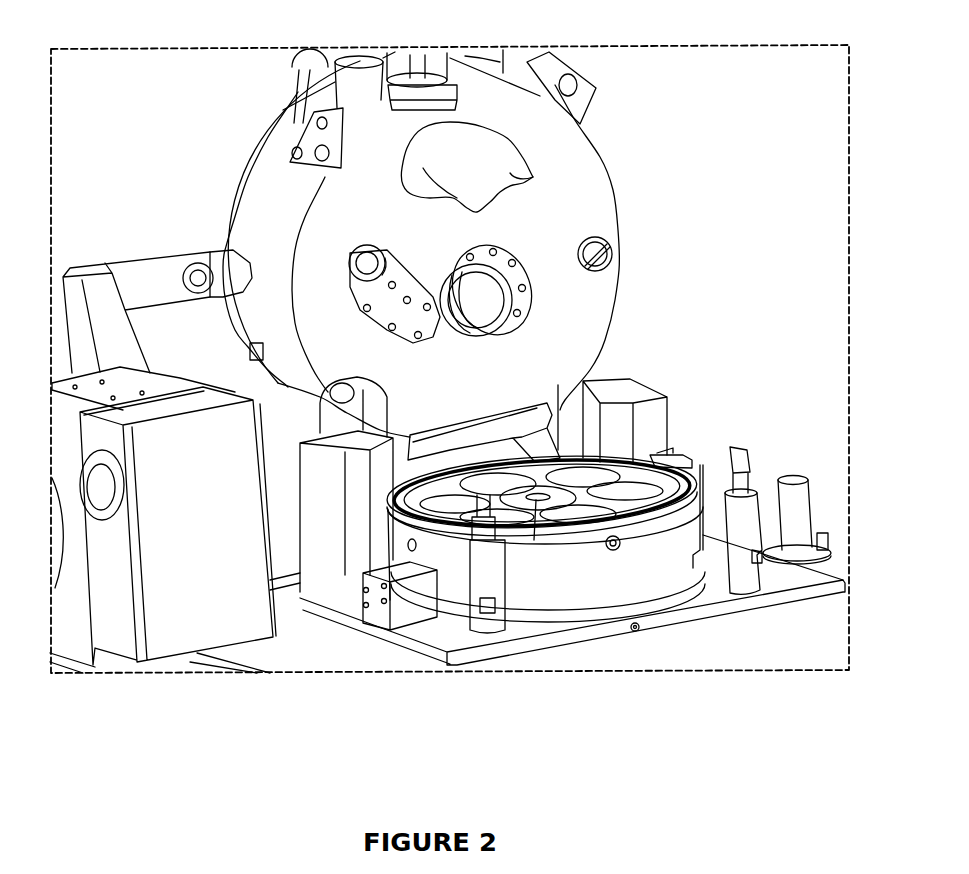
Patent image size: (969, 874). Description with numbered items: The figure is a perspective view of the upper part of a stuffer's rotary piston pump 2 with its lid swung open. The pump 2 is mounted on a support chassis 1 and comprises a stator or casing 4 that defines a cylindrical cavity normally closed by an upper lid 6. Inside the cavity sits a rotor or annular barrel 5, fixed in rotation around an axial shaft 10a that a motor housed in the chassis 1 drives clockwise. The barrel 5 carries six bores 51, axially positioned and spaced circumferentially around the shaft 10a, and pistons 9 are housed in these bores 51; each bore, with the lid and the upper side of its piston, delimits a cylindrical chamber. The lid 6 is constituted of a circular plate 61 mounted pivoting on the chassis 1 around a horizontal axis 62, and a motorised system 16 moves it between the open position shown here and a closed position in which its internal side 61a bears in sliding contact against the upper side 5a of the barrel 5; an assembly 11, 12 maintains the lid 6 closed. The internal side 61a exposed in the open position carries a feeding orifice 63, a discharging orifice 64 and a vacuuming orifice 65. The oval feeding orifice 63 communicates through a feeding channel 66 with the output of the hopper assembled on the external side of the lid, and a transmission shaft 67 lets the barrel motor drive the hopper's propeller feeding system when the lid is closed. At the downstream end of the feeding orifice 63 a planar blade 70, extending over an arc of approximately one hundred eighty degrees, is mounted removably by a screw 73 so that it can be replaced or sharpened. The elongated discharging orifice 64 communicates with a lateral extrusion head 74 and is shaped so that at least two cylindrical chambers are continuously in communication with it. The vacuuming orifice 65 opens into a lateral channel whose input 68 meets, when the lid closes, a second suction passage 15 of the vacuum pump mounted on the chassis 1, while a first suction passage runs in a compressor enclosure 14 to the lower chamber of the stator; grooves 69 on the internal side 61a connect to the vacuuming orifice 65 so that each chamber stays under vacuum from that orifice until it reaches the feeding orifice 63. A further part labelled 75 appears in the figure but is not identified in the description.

The support chassis 1 is at (800, 577).
The rotary piston pump 2 is at (754, 362).
The stator or casing 4 is at (650, 568).
The rotor or annular barrel 5 is at (615, 478).
The upper side of the barrel 5a is at (425, 560).
The pistons 9 is at (534, 540).
The axial shaft 10a is at (568, 487).
The assembly 11 is at (757, 575).
The assembly 12 is at (593, 90).
The compressor enclosure 14 is at (373, 607).
The second suction passage 15 is at (350, 560).
The motorised system 16 is at (193, 610).
The bores 51 is at (668, 455).
The upper lid 6 is at (283, 110).
The circular plate 61 is at (258, 190).
The internal side of the lid 61a is at (573, 168).
The horizontal axis 62 is at (540, 494).
The feeding orifice 63 is at (560, 405).
The discharging orifice 64 is at (537, 172).
The vacuuming orifice 65 is at (348, 263).
The feeding channel 66 is at (477, 340).
The transmission shaft 67 is at (692, 457).
The input of the vacuuming channel 68 is at (362, 433).
The grooves 69 is at (385, 304).
The planar blade 70 is at (523, 265).
The screw 73 is at (460, 262).
The lateral extrusion head 74 is at (452, 60).
The bolt 75 is at (257, 352).